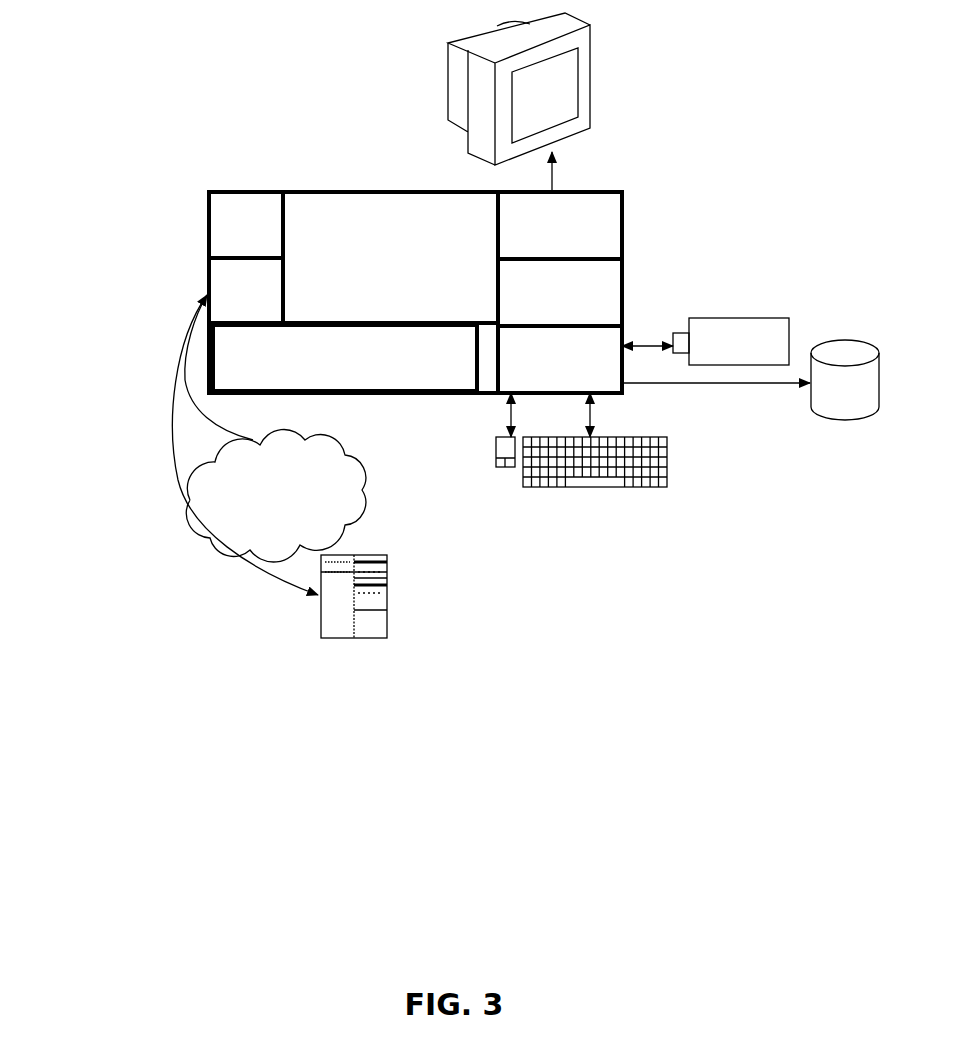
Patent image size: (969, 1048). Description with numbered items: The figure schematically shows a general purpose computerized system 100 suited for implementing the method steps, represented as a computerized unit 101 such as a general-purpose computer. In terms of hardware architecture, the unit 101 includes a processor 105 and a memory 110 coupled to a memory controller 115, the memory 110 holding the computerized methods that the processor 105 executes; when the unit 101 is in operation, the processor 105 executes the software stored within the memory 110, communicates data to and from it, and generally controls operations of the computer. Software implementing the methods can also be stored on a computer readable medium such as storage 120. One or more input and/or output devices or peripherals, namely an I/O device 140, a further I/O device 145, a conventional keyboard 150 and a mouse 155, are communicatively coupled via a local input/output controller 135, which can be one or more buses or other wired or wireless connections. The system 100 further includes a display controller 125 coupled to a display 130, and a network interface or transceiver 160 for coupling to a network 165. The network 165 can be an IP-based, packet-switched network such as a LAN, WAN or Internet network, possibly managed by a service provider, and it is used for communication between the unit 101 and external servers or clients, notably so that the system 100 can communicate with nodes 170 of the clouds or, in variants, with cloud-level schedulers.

The computerized system 100 is at (120, 87).
The computerized unit 101 is at (168, 43).
The processor 105 is at (246, 257).
The memory 110 is at (428, 292).
The memory controller 115 is at (560, 301).
The storage 120 is at (348, 395).
The display controller 125 is at (560, 234).
The display 130 is at (592, 70).
The input/output controller 135 is at (660, 294).
The input/output device 140 is at (722, 318).
The input/output device 145 is at (845, 380).
The keyboard 150 is at (667, 465).
The mouse 155 is at (496, 448).
The network interface or transceiver 160 is at (353, 300).
The network 165 is at (268, 445).
The nodes 170 is at (388, 562).